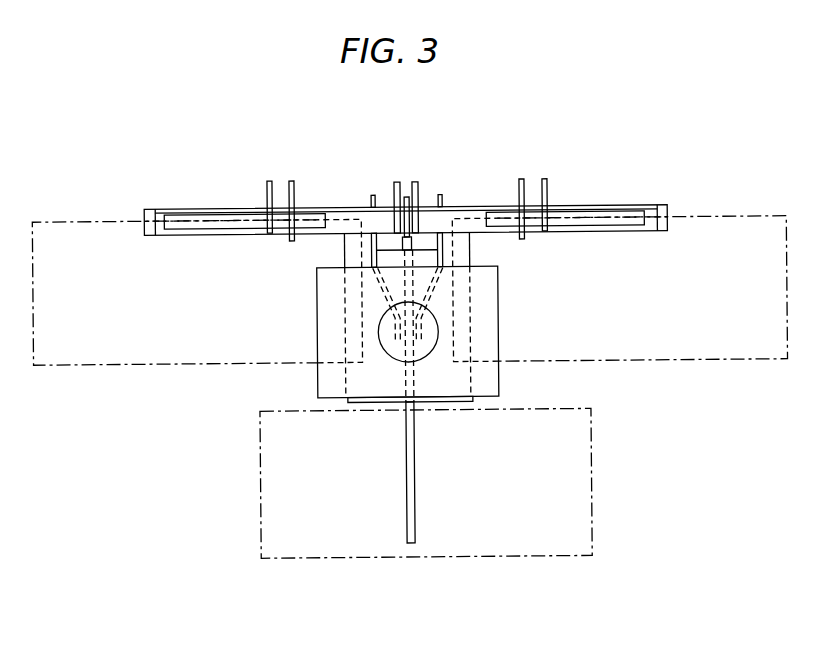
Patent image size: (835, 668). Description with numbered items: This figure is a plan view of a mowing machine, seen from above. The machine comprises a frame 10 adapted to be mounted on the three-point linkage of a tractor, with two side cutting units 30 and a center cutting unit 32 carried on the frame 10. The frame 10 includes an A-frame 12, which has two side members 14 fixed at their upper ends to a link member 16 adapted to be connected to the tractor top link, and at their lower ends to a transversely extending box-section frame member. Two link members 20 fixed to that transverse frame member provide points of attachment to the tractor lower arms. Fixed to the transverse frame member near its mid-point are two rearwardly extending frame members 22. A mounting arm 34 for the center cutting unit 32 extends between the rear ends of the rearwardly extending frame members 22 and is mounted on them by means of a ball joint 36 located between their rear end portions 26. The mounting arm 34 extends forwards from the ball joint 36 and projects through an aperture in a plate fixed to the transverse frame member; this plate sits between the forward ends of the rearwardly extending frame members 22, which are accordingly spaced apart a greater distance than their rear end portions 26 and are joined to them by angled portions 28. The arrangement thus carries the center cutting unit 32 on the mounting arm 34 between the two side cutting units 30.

The frame 10 is at (455, 208).
The A-frame 12 is at (368, 212).
The side members 14 is at (335, 231).
The link member 16 is at (419, 182).
The link members 20 is at (292, 180).
The rearwardly extending frame members 22 is at (373, 248).
The rear end portions 26 is at (420, 333).
The angled portions 28 is at (470, 287).
The side cutting units 30 is at (168, 355).
The center cutting unit 32 is at (422, 558).
The mounting arm 34 is at (413, 481).
The ball joint 36 is at (388, 348).